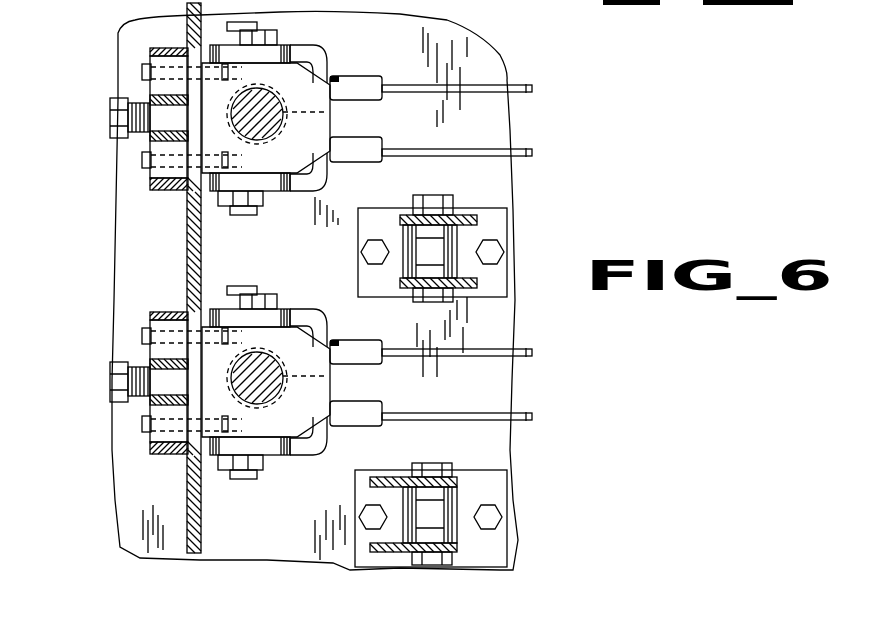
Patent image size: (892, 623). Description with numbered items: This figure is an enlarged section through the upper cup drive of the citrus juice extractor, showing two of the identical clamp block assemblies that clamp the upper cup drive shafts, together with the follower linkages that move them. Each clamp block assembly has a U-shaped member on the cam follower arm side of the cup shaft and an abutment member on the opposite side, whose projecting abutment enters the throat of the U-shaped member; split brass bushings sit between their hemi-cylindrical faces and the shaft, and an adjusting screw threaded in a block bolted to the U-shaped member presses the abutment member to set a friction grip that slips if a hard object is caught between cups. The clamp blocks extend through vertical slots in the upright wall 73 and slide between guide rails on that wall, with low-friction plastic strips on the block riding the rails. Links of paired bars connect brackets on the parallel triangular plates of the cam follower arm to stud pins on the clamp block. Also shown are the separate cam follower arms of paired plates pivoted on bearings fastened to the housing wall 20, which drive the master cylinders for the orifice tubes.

The housing wall 20 is at (133, 522).
The upright wall 73 is at (203, 537).